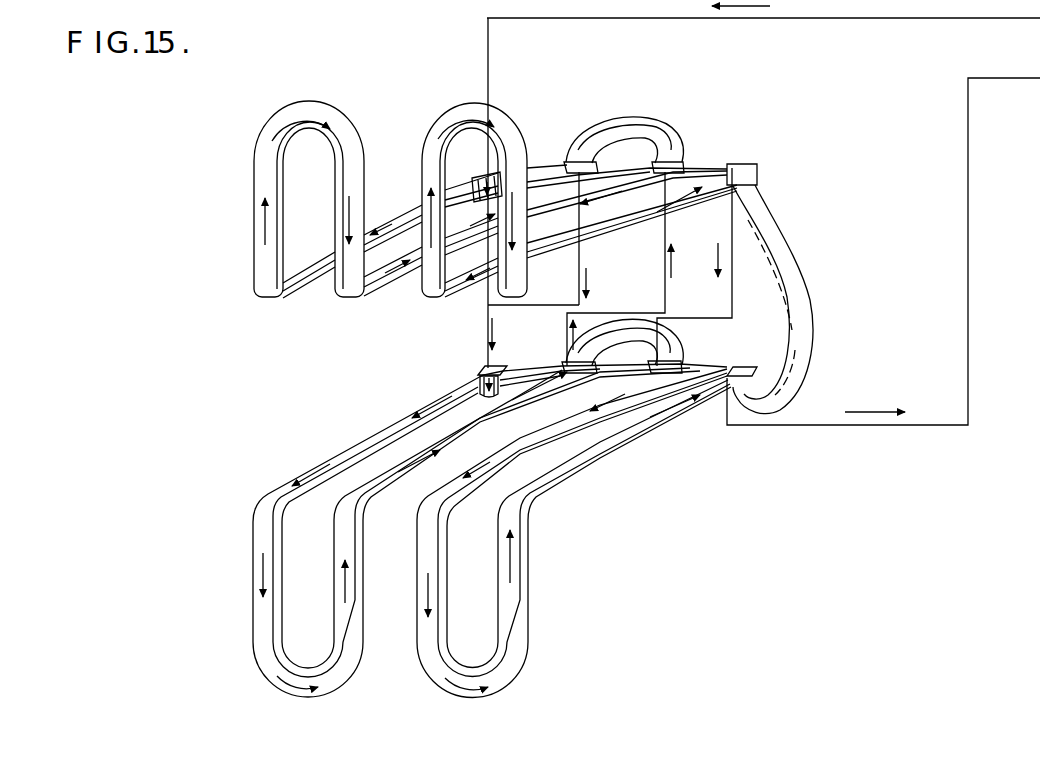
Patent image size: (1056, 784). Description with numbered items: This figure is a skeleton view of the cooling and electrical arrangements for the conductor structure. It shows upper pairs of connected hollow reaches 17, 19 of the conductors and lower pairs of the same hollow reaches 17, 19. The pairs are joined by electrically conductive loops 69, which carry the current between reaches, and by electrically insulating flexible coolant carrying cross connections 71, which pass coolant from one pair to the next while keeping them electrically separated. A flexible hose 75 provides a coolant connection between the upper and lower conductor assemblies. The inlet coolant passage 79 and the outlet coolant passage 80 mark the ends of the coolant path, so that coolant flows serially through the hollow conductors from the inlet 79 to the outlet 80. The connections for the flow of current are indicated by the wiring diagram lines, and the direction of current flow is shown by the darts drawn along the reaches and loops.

The hollow reach 17 is at (378, 297).
The hollow reach 19 is at (411, 203).
The electrically conductive loop 69 is at (336, 110).
The electrically insulating flexible coolant carrying cross connection 71 is at (680, 136).
The flexible hose 75 is at (791, 272).
The coolant inlet passage 79 is at (476, 191).
The coolant outlet passage 80 is at (479, 393).